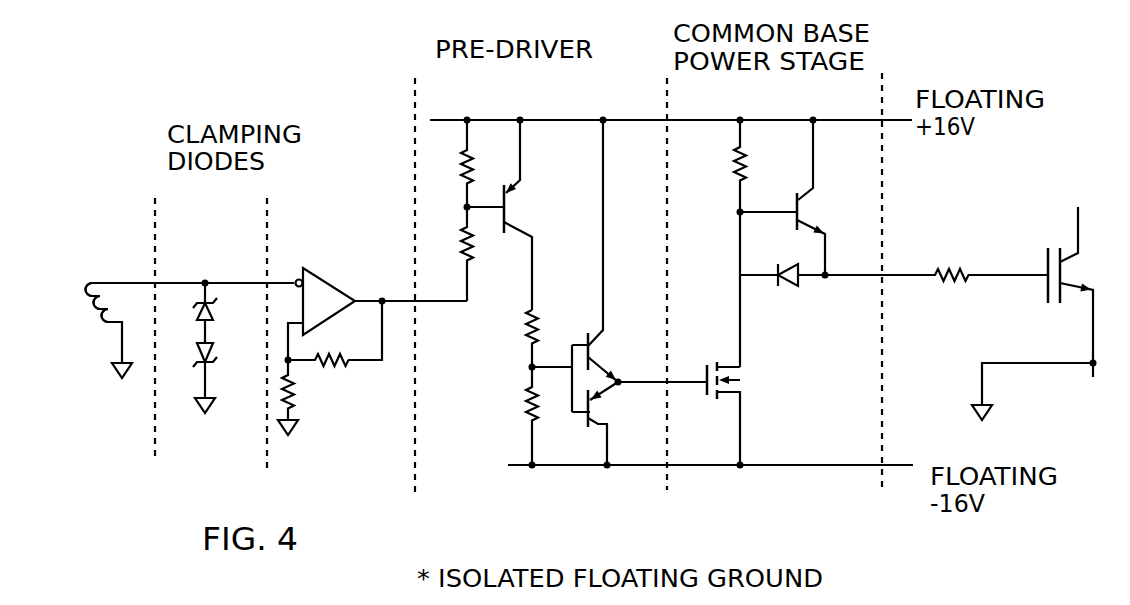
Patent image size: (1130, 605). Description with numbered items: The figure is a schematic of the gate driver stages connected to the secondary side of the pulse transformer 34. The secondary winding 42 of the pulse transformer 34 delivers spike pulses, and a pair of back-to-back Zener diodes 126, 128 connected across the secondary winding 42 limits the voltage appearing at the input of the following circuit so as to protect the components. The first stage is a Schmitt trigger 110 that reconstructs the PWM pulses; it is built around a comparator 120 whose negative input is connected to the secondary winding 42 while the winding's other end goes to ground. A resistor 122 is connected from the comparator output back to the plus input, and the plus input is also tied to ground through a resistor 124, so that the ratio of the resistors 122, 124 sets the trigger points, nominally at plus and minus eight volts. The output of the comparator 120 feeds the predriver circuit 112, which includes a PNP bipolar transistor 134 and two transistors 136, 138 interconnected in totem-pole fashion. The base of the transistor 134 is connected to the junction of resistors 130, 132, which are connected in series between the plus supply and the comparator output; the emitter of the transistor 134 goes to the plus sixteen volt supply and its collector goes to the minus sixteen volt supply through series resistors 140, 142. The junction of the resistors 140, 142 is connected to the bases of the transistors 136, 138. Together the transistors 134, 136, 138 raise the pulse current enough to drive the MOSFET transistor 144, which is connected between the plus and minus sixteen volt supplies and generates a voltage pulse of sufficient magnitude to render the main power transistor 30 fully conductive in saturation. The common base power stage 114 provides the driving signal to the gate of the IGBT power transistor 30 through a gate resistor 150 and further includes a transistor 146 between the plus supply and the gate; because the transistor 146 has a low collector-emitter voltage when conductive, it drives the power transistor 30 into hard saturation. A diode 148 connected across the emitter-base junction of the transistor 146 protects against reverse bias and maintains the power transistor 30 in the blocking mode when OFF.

The main power transistor 30 is at (1046, 285).
The pulse transformer 34 is at (110, 330).
The secondary winding 42 is at (104, 300).
The Schmitt trigger 110 is at (350, 230).
The predriver circuit 112 is at (515, 112).
The common base power stage 114 is at (832, 112).
The comparator 120 is at (350, 283).
The resistor 122 is at (336, 366).
The resistor 124 is at (294, 400).
The Zener diode 126 is at (211, 300).
The Zener diode 128 is at (214, 360).
The resistor 130 is at (462, 172).
The resistor 132 is at (462, 250).
The PNP bipolar transistor 134 is at (503, 228).
The transistor 136 is at (585, 337).
The transistor 138 is at (590, 427).
The resistor 140 is at (526, 325).
The resistor 142 is at (526, 406).
The MOSFET transistor 144 is at (706, 394).
The transistor 146 is at (796, 197).
The diode 148 is at (792, 286).
The gate resistor 150 is at (960, 270).